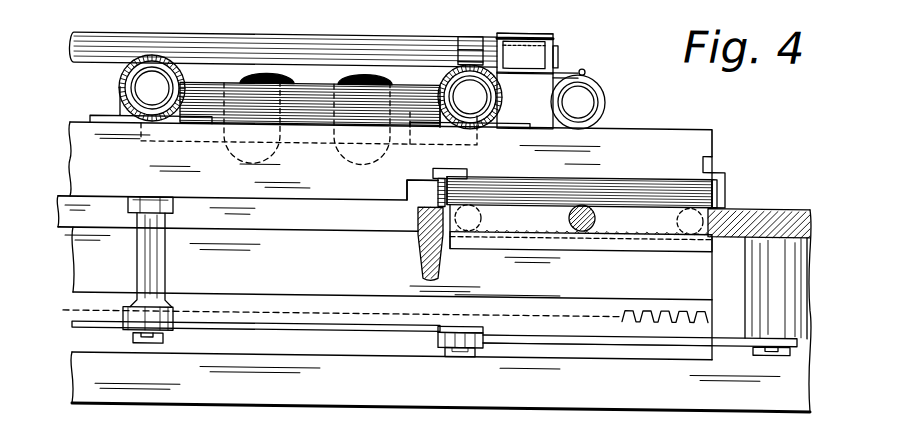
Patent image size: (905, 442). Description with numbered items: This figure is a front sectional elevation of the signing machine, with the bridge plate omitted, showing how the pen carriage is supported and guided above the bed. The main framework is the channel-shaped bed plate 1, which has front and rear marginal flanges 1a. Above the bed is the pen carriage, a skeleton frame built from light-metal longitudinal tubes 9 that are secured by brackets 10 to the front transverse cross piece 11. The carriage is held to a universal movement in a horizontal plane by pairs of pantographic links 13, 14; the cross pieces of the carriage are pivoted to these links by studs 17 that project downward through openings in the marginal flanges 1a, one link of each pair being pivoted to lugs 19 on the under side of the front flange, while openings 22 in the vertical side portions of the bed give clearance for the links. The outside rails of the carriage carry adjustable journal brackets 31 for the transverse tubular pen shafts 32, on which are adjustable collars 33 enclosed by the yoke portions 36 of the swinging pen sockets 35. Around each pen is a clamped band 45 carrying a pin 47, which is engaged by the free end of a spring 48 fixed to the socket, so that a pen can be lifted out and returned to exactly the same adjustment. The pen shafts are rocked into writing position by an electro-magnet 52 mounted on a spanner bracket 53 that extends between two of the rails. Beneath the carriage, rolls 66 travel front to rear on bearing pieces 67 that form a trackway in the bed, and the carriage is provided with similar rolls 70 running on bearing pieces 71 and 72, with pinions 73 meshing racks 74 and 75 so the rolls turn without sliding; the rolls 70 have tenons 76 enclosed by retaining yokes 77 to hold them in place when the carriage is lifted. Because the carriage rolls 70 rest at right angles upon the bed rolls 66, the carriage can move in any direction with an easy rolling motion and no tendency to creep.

The bed plate 1 is at (437, 306).
The marginal flanges 1a is at (788, 230).
The longitudinal tubes 9 is at (470, 96).
The brackets 10 is at (470, 127).
The front transverse cross piece 11 is at (384, 234).
The pantographic links 13 is at (104, 331).
The pantographic links 14 is at (390, 324).
The studs 17 is at (157, 260).
The lugs 19 is at (776, 296).
The openings 22 is at (590, 351).
The journal brackets 31 is at (468, 32).
The pen shafts 32 is at (322, 40).
The collars 33 is at (520, 28).
The pen sockets 35 is at (553, 77).
The yoke portions 36 is at (548, 26).
The band 45 is at (606, 93).
The pin 47 is at (585, 64).
The spring 48 is at (592, 70).
The electro-magnet 52 is at (346, 69).
The spanner bracket 53 is at (225, 91).
The rolls 66 is at (573, 227).
The bearing pieces 67 is at (634, 241).
The rolls 70 is at (560, 189).
The bearing piece 71 is at (464, 168).
The bearing piece 72 is at (714, 157).
The pinions 73 is at (442, 173).
The rack 74 is at (433, 164).
The rack 75 is at (725, 165).
The tenons 76 is at (433, 190).
The retaining yokes 77 is at (432, 182).